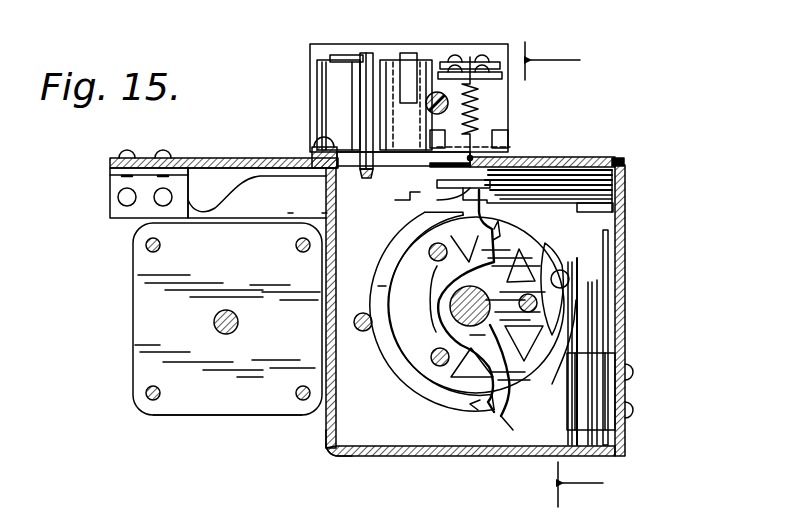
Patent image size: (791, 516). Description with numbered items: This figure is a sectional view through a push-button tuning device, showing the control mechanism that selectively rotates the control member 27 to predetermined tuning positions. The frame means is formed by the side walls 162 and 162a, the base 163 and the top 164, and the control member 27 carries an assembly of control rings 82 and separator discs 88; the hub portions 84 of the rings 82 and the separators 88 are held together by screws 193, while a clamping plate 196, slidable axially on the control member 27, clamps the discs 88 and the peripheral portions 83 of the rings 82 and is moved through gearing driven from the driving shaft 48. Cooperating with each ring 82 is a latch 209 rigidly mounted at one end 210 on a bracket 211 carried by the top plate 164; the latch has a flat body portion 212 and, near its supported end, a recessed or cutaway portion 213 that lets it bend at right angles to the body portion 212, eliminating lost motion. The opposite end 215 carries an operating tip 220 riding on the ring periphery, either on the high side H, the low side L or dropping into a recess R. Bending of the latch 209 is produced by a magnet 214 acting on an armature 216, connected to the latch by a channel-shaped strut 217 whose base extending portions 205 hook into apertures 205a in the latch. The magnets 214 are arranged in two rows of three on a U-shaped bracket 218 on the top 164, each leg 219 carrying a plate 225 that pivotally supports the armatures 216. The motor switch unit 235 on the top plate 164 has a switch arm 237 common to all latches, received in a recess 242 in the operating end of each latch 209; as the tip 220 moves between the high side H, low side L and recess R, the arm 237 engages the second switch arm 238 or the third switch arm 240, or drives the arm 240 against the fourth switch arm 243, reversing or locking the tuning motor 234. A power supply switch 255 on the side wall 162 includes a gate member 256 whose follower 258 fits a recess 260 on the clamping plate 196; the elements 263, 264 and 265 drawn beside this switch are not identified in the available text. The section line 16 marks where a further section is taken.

The section line 16- 16 is at (579, 274).
The control member 27 is at (482, 306).
The driving shaft 48 is at (362, 332).
The control rings 82 is at (423, 390).
The peripheral portions 83 is at (460, 392).
The hub portions 84 is at (440, 266).
The separator discs 88 is at (464, 408).
The side wall 162 is at (626, 240).
The side wall 162a is at (326, 422).
The base 163 is at (420, 458).
The top 164 is at (218, 158).
The screws 193 is at (437, 363).
The clamping plate 196 is at (610, 327).
The base extending portions 205 is at (376, 168).
The apertures 205a is at (412, 200).
The latch 209 is at (278, 210).
The end 210 is at (170, 188).
The bracket 211 is at (113, 183).
The body portion 212 is at (307, 214).
The recessed or cutaway portion 213 is at (207, 212).
The magnet 214 is at (322, 70).
The end 215 is at (455, 174).
The armature 216 is at (349, 55).
The strut 217 is at (360, 112).
The bracket 218 is at (313, 88).
The leg 219 is at (509, 89).
The operating tip 220 is at (418, 233).
The plate 225 is at (500, 124).
The tuning motor 234 is at (257, 410).
The motor switch unit 235 is at (628, 157).
The switch arm 237 is at (619, 168).
The second switch arm 238 is at (563, 167).
The third switch arm 240 is at (538, 200).
The recess 242 is at (478, 303).
The fourth switch arm 243 is at (590, 167).
The power supply switch 255 is at (619, 372).
The gate member 256 is at (553, 353).
The follower 258 is at (562, 270).
The recess 260 is at (550, 250).
The contact strip 263 is at (598, 312).
The contact strip 264 is at (585, 272).
The contact strip 265 is at (585, 292).
The low side L is at (378, 286).
The recess R is at (464, 248).
The high side H is at (508, 426).